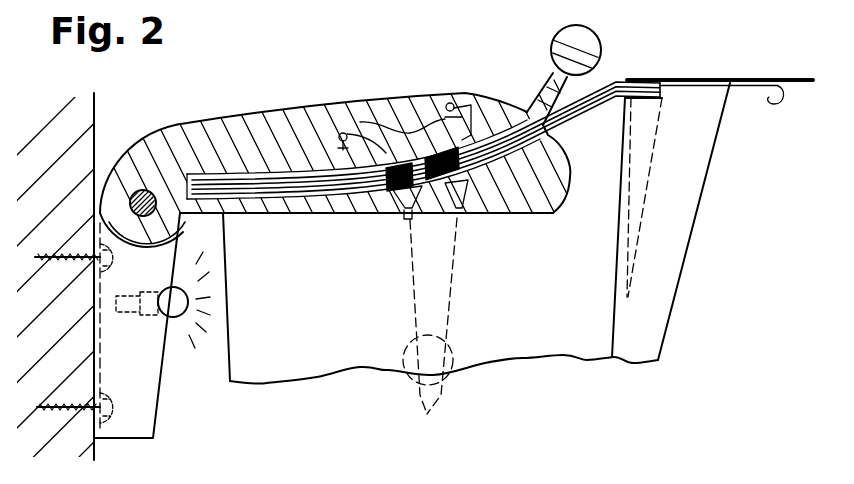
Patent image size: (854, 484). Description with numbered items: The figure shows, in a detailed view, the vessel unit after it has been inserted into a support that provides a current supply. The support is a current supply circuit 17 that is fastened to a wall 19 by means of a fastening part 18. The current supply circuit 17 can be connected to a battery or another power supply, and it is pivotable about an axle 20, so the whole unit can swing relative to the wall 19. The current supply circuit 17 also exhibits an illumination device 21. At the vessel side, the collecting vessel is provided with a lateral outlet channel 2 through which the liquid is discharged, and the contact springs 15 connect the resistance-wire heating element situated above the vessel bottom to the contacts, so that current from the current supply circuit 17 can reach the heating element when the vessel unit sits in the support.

The lateral outlet channel 2 is at (684, 189).
The contact springs 15 is at (430, 327).
The current supply circuit 17 is at (231, 122).
The fastening part 18 is at (147, 403).
The wall 19 is at (94, 136).
The axle 20 is at (143, 198).
The illumination device 21 is at (182, 316).